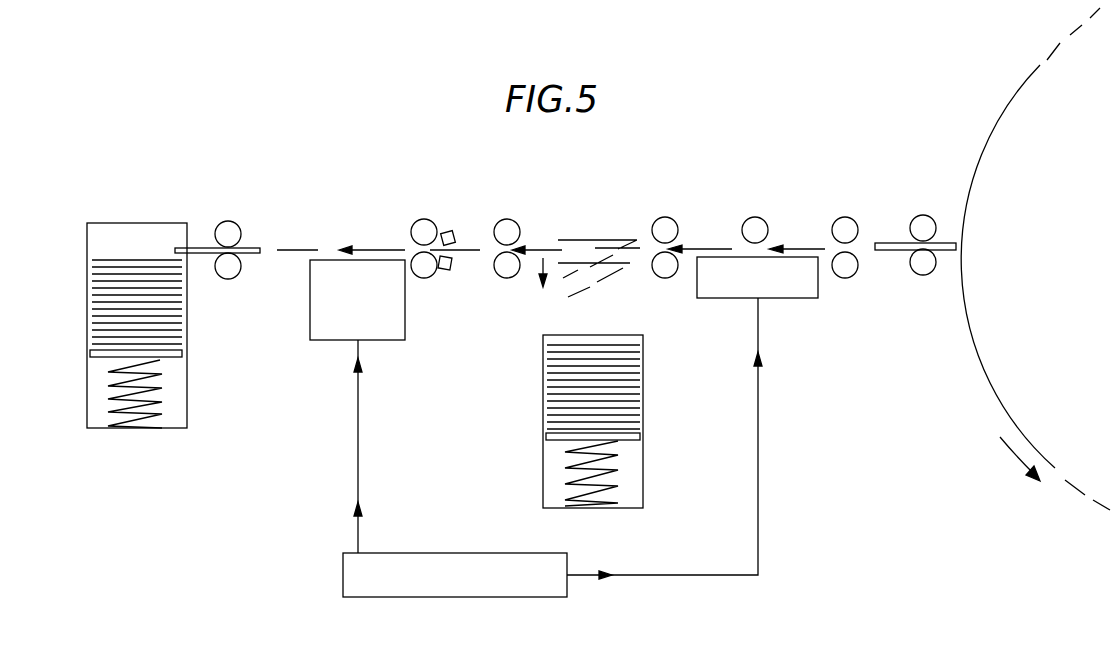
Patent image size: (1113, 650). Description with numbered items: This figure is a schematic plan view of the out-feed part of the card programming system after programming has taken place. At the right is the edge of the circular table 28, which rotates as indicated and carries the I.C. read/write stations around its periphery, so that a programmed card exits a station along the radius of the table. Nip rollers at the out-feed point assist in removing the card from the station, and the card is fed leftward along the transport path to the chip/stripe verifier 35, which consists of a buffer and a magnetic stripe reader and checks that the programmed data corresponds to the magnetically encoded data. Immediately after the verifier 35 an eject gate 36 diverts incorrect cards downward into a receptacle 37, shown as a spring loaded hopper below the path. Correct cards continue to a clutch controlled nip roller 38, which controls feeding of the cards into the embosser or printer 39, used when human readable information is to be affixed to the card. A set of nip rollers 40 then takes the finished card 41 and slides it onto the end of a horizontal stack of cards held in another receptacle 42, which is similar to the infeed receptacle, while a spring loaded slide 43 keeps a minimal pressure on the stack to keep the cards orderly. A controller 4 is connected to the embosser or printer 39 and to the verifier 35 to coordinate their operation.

The controller 4 is at (463, 598).
The circular table 28 is at (990, 390).
The chip/stripe verifier 35 is at (715, 299).
The eject gate 36 is at (612, 240).
The receptacle 37 is at (644, 458).
The clutch controlled nip roller 38 is at (413, 222).
The embosser or printer 39 is at (310, 318).
The set of nip rollers 40 is at (238, 230).
The finished card 41 is at (207, 247).
The receptacle 42 is at (187, 383).
The spring loaded slide 43 is at (100, 359).